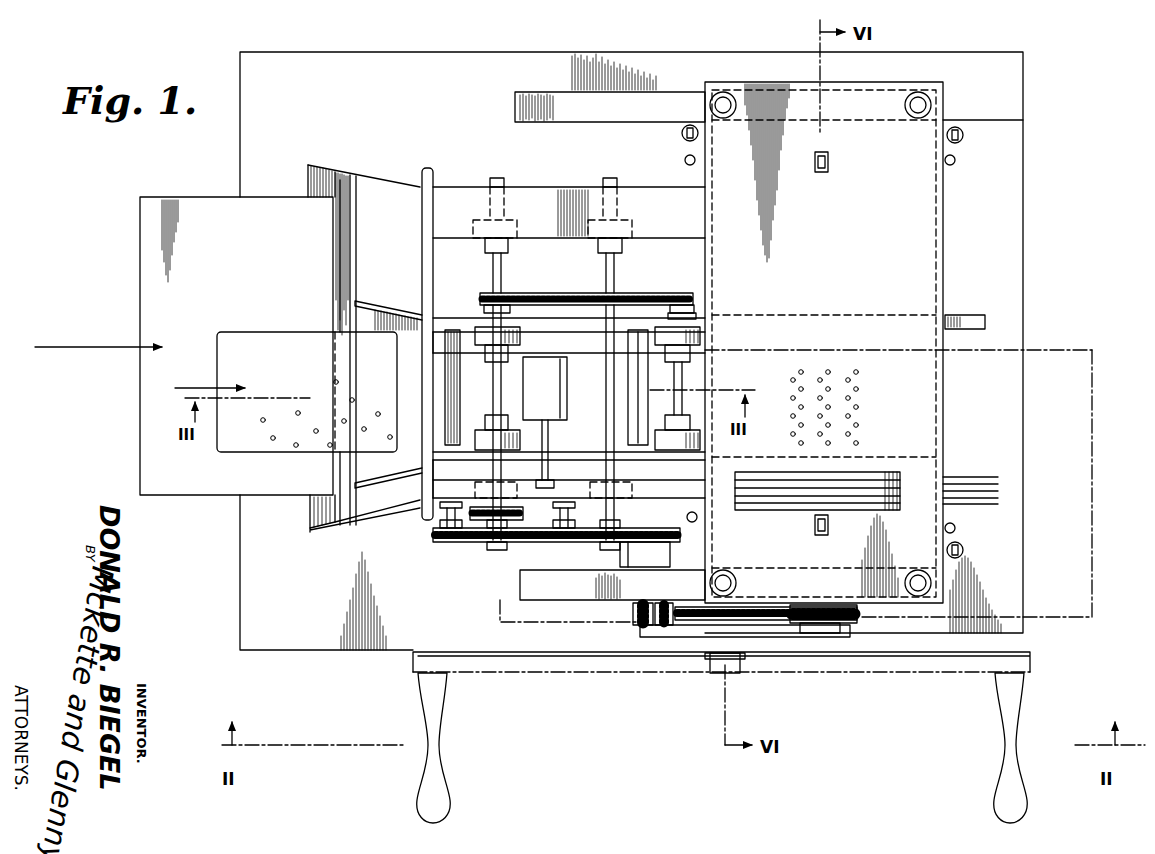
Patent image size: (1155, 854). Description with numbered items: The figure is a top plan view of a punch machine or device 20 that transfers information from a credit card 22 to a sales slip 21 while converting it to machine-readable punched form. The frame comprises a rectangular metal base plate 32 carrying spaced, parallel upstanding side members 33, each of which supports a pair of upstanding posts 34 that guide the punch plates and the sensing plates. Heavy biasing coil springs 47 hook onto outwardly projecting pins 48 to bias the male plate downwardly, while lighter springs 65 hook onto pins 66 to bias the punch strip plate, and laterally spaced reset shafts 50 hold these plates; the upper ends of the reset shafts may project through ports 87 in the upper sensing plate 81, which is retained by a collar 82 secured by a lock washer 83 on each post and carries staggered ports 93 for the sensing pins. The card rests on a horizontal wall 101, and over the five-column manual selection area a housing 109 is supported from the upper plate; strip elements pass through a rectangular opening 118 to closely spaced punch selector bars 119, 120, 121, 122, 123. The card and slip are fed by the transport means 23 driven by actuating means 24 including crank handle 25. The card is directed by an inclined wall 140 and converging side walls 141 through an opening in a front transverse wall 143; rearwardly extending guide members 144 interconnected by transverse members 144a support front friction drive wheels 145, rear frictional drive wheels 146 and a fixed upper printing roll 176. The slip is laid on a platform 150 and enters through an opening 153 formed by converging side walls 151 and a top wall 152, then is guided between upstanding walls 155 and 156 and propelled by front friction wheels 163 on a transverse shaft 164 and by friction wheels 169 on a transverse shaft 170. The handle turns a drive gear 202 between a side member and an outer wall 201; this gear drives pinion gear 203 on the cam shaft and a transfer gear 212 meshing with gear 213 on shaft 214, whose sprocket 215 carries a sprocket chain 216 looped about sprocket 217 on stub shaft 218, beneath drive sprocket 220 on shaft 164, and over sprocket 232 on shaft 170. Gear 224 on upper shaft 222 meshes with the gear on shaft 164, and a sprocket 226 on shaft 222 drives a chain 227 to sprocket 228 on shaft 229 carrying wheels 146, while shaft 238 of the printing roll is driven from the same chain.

The punch machine or device 20 is at (1052, 55).
The sales slip 21 is at (140, 210).
The credit card 22 is at (217, 355).
The transport means 23 is at (344, 581).
The actuating means 24 is at (690, 705).
The crank handle 25 is at (928, 672).
The base plate 32 is at (330, 55).
The side members 33 is at (570, 98).
The posts 34 is at (723, 92).
The biasing coil springs 47 is at (682, 136).
The outwardly projecting pin 48 is at (690, 125).
The reset shafts 50 is at (829, 162).
The springs 65 is at (688, 163).
The outwardly projecting pin 66 is at (695, 158).
The upper sensing plate 81 is at (935, 402).
The collar 82 is at (905, 105).
The lock washer 83 is at (723, 113).
The port 87 is at (818, 173).
The port 93 is at (858, 395).
The horizontal wall 101 is at (985, 322).
The housing 109 is at (1092, 405).
The rectangular opening 118 is at (765, 506).
The punch selector bar 119 is at (998, 477).
The punch selector bar 120 is at (998, 484).
The punch selector bar 121 is at (998, 491).
The punch selector bar 122 is at (998, 498).
The punch selector bar 123 is at (998, 504).
The inclined wall 140 is at (352, 322).
The converging side walls 141 is at (380, 308).
The front transverse wall 143 is at (427, 168).
The guide members 144 is at (457, 332).
The transverse members 144a is at (505, 375).
The friction drive wheels 145 is at (520, 336).
The rear frictional drive wheels 146 is at (702, 336).
The platform 150 is at (318, 184).
The converging side walls 151 is at (320, 532).
The top wall 152 is at (375, 195).
The opening 153 is at (325, 512).
The upstanding wall 155 is at (448, 195).
The upstanding wall 156 is at (425, 520).
The front friction wheels 163 is at (506, 218).
The transverse shaft 164 is at (501, 268).
The friction wheels 169 is at (604, 220).
The transverse shaft 170 is at (614, 270).
The upper roll 176 is at (560, 383).
The upstanding wall 201 is at (770, 640).
The drive gear 202 is at (700, 622).
The pinion gear 203 is at (857, 625).
The transfer gear 212 is at (660, 633).
The gear 213 is at (632, 610).
The shaft 214 is at (654, 627).
The sprocket 215 is at (640, 528).
The sprocket chain 216 is at (520, 543).
The sprocket 217 is at (445, 546).
The stub shaft 218 is at (440, 530).
The drive sprocket 220 is at (492, 550).
The upper shaft 222 is at (493, 384).
The gear 224 is at (523, 514).
The sprocket 226 is at (500, 298).
The chain 227 is at (553, 295).
The sprocket 228 is at (686, 300).
The shaft 229 is at (683, 376).
The sprocket 232 is at (602, 545).
The shaft 238 is at (548, 433).